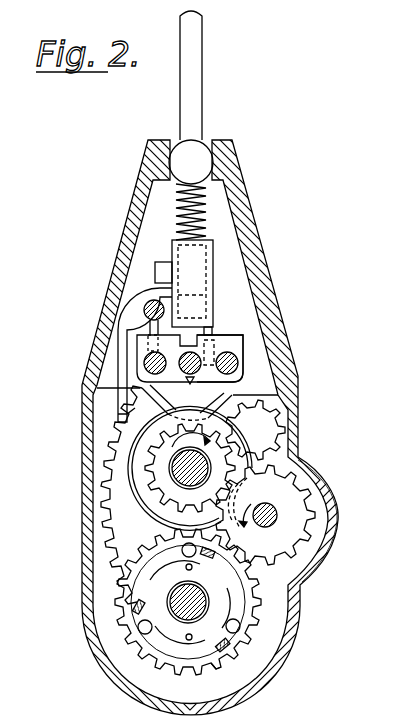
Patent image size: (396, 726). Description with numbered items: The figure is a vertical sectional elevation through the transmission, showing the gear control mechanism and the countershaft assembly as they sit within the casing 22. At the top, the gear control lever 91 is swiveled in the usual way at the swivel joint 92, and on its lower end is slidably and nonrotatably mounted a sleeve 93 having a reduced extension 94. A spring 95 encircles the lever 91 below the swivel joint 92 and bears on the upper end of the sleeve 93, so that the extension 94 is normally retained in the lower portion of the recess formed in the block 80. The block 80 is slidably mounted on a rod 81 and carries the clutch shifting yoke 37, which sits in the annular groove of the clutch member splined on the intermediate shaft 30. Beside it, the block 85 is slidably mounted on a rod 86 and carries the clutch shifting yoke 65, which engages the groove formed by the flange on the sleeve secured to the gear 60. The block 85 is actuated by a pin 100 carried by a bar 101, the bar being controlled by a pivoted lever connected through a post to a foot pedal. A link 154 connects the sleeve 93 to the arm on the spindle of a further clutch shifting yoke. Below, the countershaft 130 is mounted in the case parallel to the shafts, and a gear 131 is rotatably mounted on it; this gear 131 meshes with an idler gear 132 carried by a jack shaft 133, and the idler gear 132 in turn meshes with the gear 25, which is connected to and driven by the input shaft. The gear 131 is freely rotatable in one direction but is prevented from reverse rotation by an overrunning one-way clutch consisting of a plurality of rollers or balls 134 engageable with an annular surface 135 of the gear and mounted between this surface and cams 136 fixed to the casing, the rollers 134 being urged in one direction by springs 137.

The housing 22 is at (81, 486).
The gear 25 is at (236, 435).
The intermediate shaft 30 is at (184, 467).
The clutch shifting yoke 37 is at (204, 395).
The gear 60 is at (250, 408).
The clutch shifting yoke 65 is at (118, 383).
The block 80 is at (242, 333).
The rod 81 is at (238, 356).
The block 85 is at (143, 348).
The rod 86 is at (143, 360).
The gear control lever 91 is at (200, 80).
The swivel joint 92 is at (203, 162).
The sleeve 93 is at (210, 253).
The reduced extension 94 is at (212, 332).
The spring 95 is at (200, 210).
The pin 100 is at (142, 311).
The bar 101 is at (143, 291).
The countershaft 130 is at (178, 588).
The gear 131 is at (262, 594).
The idler gear 132 is at (302, 484).
The jack shaft 133 is at (278, 514).
The rollers or balls 134 is at (241, 626).
The annular surface 135 is at (218, 660).
The cams 136 is at (236, 607).
The springs 137 is at (234, 655).
The link 154 is at (117, 416).